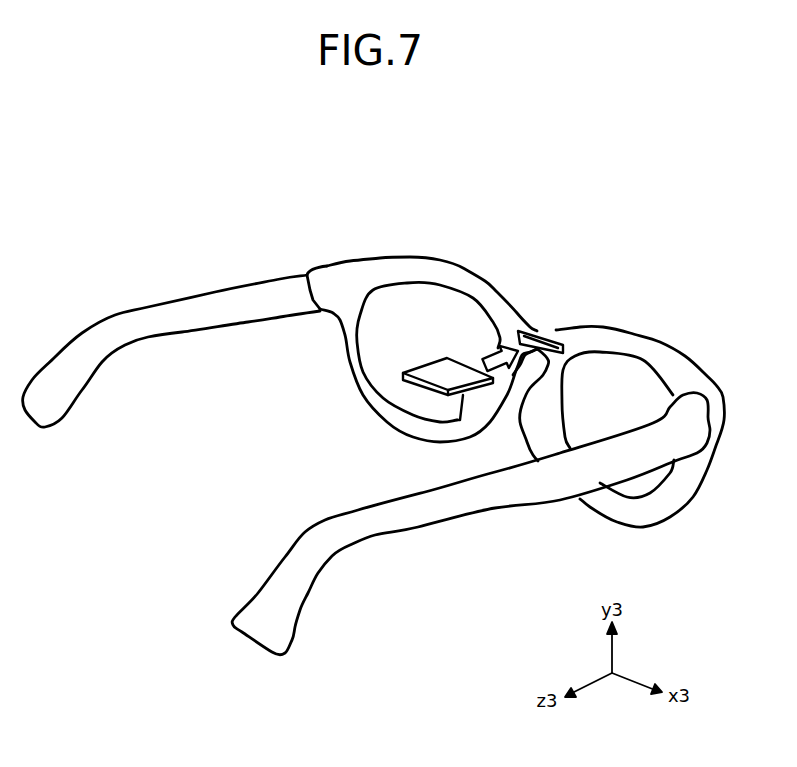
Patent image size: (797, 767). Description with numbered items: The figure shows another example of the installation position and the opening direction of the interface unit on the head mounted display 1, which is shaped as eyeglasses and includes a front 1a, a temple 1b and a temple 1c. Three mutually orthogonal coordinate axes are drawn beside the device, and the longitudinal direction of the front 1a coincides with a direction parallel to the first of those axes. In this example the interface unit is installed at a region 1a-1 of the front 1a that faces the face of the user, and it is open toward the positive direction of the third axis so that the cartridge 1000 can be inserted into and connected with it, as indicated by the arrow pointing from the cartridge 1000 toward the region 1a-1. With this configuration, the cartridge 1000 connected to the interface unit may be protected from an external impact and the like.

The head mounted display 1 is at (374, 426).
The front 1a is at (443, 272).
The region of the front 1a-1 is at (540, 332).
The temple 1b is at (420, 520).
The temple 1c is at (148, 313).
The cartridge 1000 is at (430, 372).